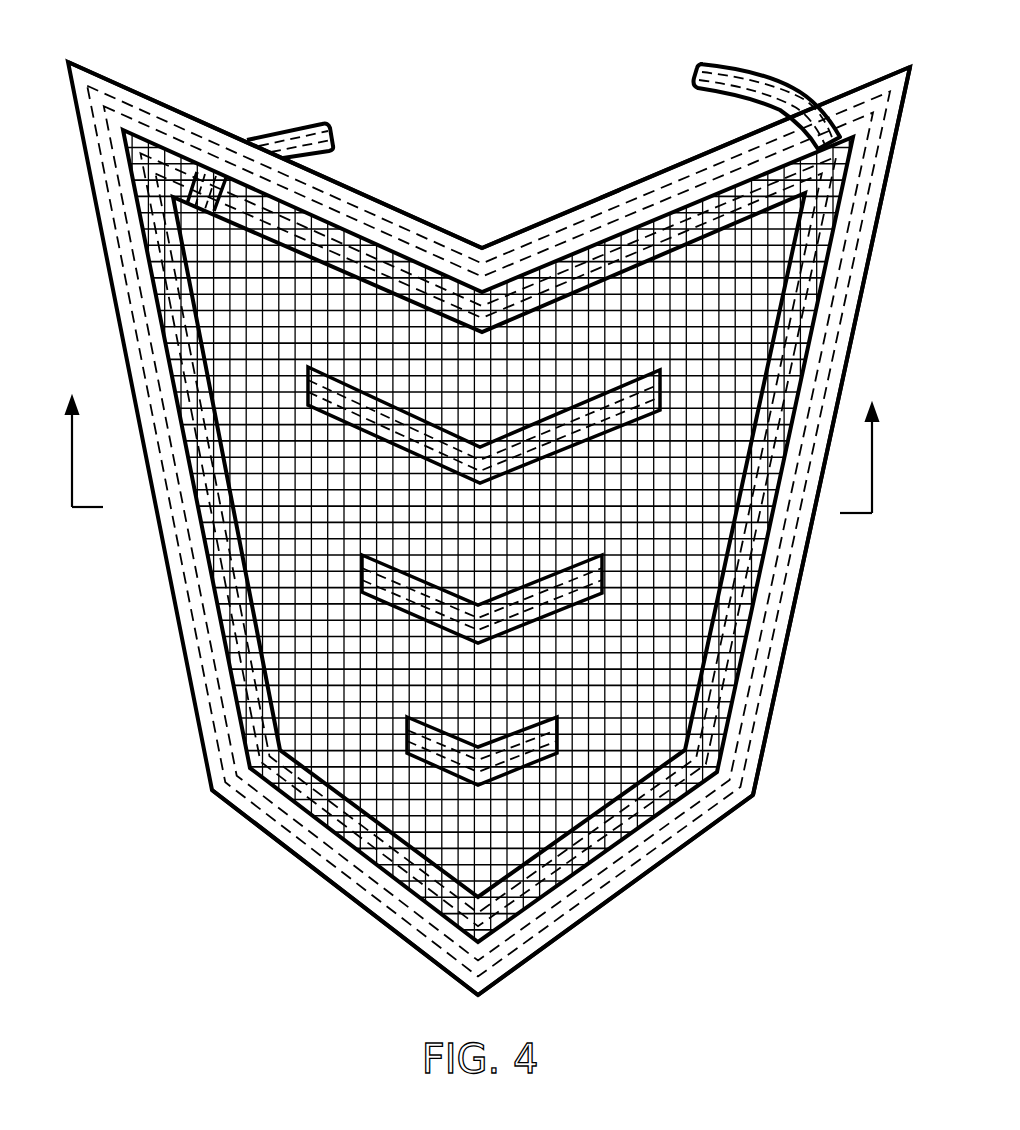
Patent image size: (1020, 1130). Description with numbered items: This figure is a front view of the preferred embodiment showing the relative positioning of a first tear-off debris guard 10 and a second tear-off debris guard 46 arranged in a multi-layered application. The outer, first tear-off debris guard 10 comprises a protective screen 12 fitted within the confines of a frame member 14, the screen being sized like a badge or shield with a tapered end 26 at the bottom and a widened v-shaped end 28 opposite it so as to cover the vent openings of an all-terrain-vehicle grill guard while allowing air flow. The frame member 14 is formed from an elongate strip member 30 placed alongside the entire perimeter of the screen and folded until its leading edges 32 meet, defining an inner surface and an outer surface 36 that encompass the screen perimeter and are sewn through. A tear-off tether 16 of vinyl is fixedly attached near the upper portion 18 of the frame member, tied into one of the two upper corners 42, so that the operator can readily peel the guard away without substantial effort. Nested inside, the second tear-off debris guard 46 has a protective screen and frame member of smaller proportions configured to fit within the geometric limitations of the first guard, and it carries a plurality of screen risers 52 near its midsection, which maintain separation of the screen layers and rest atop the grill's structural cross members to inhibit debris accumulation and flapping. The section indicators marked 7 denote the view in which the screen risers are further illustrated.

The tear-off debris guard 10 is at (246, 933).
The second tear-off debris guard 46 is at (246, 933).
The protective screen 12 is at (310, 662).
The frame member 14 is at (710, 830).
The tear-off tether 16 is at (287, 130).
The upper portion 18 is at (135, 90).
The tapered end 26 is at (380, 922).
The widened v-shaped end 28 is at (550, 217).
The elongate strip member 30 is at (662, 171).
The leading edges 32 is at (310, 815).
The outer surface 36 is at (377, 200).
The upper corner 42 is at (882, 78).
The screen riser 52 is at (515, 773).
The section line 7 is at (472, 475).